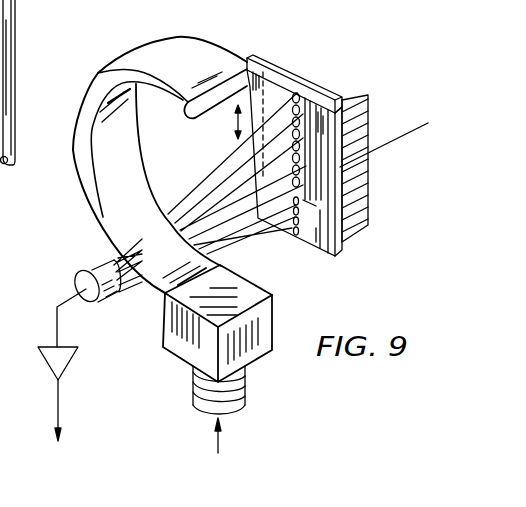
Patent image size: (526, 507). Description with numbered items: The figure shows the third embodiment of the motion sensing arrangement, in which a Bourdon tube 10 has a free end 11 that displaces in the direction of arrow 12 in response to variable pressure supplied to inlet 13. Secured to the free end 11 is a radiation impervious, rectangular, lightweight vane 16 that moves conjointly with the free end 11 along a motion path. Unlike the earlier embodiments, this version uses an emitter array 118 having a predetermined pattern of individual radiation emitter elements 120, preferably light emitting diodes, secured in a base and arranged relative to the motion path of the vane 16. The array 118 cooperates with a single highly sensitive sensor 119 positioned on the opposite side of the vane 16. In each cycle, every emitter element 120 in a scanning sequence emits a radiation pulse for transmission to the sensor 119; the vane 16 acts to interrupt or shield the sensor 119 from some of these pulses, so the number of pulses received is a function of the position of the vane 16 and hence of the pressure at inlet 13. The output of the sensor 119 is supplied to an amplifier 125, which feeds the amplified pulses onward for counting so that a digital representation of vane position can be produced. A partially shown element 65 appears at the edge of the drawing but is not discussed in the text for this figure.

The strip 65 is at (13, 42).
The Bourdon tube 10 is at (94, 233).
The free end 11 is at (227, 70).
The arrow 12 is at (233, 122).
The vane 16 is at (274, 88).
The emitter array 118 is at (342, 99).
The radiation emitter elements 120 is at (295, 236).
The sensor 119 is at (93, 265).
The amplifier 125 is at (62, 352).
The inlet 13 is at (228, 413).